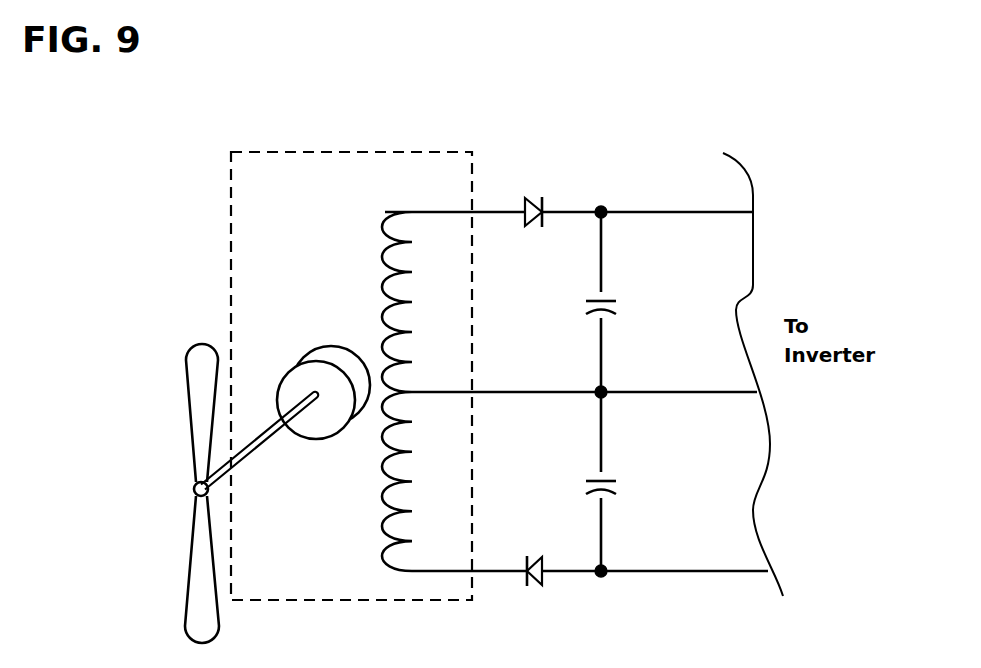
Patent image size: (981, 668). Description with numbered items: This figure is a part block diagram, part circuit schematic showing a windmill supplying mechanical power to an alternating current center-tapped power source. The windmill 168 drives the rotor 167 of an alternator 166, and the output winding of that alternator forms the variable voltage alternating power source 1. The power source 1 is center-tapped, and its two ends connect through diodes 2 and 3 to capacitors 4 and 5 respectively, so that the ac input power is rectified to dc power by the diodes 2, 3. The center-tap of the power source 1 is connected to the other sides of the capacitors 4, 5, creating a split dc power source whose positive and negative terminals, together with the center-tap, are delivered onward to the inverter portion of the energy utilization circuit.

The alternator 166 is at (280, 152).
The alternating power source 1 is at (385, 212).
The diode 2 is at (530, 198).
The diode 3 is at (538, 586).
The capacitor 4 is at (613, 303).
The capacitor 5 is at (613, 479).
The rotor 167 is at (327, 350).
The windmill 168 is at (186, 360).